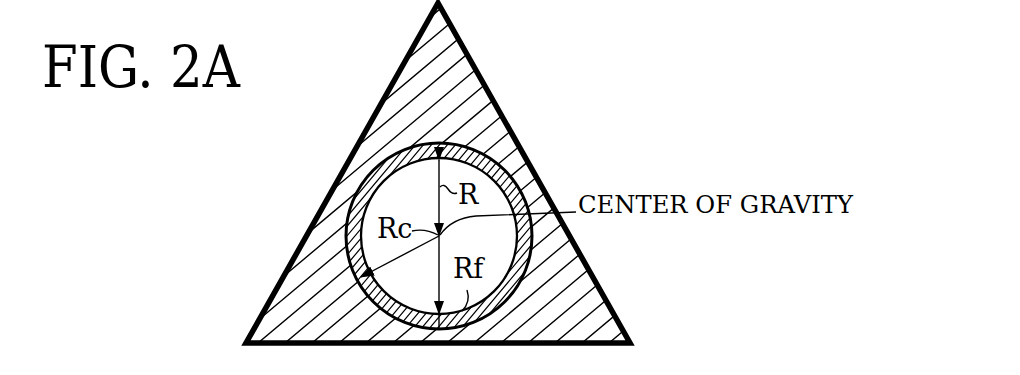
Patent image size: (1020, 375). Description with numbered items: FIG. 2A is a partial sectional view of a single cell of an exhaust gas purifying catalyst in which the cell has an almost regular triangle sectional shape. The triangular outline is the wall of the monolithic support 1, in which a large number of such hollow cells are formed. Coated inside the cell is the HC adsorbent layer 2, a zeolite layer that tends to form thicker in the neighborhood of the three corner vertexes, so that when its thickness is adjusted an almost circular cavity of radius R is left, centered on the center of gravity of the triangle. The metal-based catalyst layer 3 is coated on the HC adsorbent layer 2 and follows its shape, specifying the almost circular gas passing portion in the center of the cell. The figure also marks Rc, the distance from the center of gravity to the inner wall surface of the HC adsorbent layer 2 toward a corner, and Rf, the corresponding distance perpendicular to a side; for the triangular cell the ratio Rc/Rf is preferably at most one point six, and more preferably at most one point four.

The monolithic support 1 is at (471, 60).
The HC adsorbent layer 2 is at (497, 133).
The metal-based catalyst layer 3 is at (532, 246).